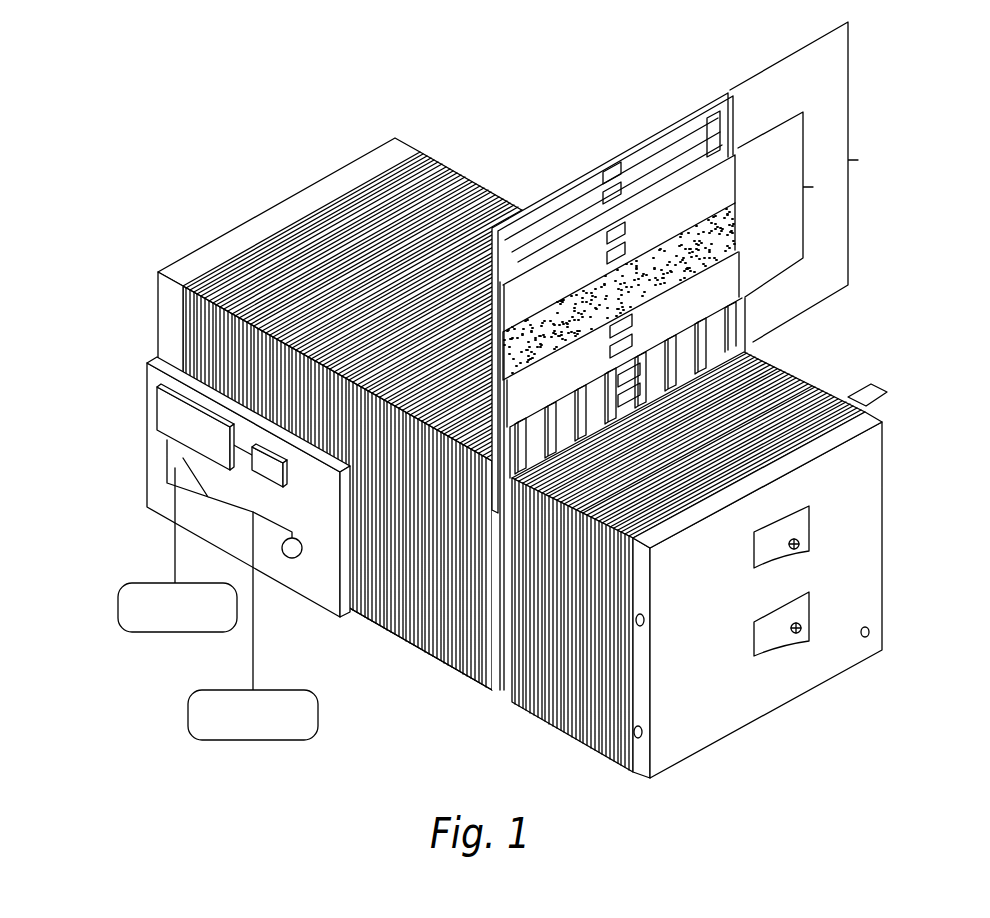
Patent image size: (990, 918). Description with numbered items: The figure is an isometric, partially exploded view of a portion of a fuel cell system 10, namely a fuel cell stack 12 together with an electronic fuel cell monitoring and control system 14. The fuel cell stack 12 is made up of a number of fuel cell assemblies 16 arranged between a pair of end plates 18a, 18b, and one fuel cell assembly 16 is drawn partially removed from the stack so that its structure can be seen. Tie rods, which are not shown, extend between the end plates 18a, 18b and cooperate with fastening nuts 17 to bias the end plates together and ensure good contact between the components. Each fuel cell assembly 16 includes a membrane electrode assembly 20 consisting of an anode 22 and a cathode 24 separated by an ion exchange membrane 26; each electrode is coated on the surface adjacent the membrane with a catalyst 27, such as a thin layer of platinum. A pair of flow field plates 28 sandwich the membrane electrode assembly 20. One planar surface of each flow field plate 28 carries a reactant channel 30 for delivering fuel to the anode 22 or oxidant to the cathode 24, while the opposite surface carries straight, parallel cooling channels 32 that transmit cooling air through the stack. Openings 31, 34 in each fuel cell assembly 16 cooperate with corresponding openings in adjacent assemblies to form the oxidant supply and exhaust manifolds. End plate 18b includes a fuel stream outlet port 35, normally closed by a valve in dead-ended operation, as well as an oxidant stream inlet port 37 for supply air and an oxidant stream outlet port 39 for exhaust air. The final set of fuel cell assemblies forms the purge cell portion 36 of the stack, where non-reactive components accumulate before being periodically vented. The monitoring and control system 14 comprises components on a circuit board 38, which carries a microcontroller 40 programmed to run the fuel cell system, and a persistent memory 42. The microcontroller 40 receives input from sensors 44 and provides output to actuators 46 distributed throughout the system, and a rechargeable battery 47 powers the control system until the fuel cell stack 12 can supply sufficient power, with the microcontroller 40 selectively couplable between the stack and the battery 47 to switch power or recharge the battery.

The fuel cell system 10 is at (165, 131).
The fuel cell stack 12 is at (442, 110).
The electronic fuel cell monitoring and control system 14 is at (126, 723).
The fuel cell assembly 16 is at (807, 182).
The fastening nut 17 is at (800, 541).
The end plate 18a is at (303, 200).
The end plate 18b is at (865, 495).
The membrane electrode assembly 20 is at (789, 204).
The anode 22 is at (735, 180).
The cathode 24 is at (740, 262).
The ion exchange membrane 26 is at (737, 222).
The catalyst 27 is at (562, 267).
The flow field plate 28 is at (730, 123).
The reactant channel 30 is at (700, 118).
The opening 31 is at (610, 168).
The cooling channel 32 is at (640, 145).
The opening 34 is at (650, 140).
The fuel stream outlet port 35 is at (871, 632).
The purge cell portion 36 is at (886, 390).
The oxidant stream inlet port 37 is at (645, 619).
The circuit board 38 is at (150, 507).
The oxidant stream outlet port 39 is at (640, 740).
The microcontroller 40 is at (160, 412).
The persistent memory 42 is at (288, 478).
The sensors 44 is at (118, 630).
The actuators 46 is at (190, 740).
The rechargeable battery 47 is at (298, 553).